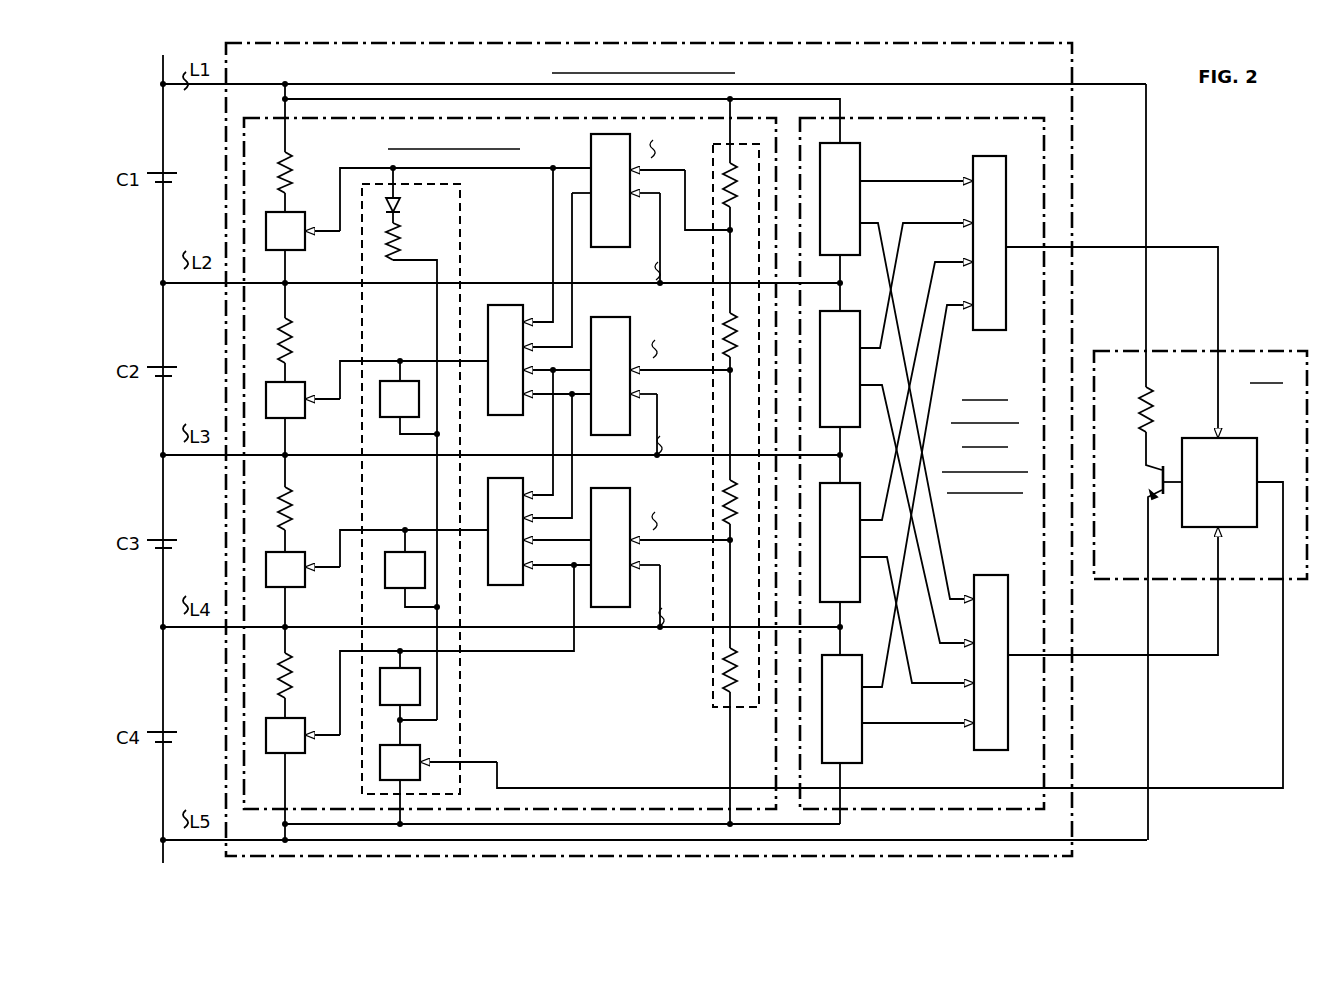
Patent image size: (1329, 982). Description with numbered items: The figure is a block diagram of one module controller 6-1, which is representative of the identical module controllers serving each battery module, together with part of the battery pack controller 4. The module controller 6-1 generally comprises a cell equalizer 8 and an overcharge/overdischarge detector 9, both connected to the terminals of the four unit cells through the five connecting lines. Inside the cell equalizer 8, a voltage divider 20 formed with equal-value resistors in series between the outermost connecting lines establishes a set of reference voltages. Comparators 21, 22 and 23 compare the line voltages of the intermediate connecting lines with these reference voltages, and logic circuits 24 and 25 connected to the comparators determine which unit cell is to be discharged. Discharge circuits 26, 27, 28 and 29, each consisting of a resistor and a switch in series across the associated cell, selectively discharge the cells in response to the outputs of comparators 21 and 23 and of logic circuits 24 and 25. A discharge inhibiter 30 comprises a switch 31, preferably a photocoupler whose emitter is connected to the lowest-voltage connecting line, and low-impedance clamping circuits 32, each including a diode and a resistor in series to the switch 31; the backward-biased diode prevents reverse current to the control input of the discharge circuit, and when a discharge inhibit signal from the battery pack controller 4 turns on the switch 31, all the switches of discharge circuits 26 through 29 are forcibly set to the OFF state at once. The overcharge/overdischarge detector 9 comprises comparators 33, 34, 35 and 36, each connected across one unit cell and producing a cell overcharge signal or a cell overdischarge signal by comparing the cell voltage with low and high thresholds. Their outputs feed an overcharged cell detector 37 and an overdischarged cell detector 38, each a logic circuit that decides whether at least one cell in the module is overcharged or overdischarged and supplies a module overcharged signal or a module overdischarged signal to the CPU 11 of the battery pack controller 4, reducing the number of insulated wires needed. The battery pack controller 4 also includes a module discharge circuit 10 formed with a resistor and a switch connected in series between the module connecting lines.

The battery pack controller 4 is at (1250, 351).
The module controller 6-1 is at (1072, 173).
The cell equalizer 8 is at (450, 118).
The overcharge/overdischarge detector 9 is at (918, 117).
The module discharge circuit 10 is at (1107, 527).
The CPU 11 is at (1240, 438).
The voltage divider 20 is at (713, 707).
The comparator 21 is at (617, 247).
The comparator 22 is at (608, 322).
The comparator 23 is at (608, 489).
The logic circuit 24 is at (509, 415).
The logic circuit 25 is at (509, 585).
The discharge circuit 26 is at (297, 195).
The discharge circuit 27 is at (302, 368).
The discharge circuit 28 is at (297, 542).
The discharge circuit 29 is at (297, 710).
The discharge inhibiter 30 is at (462, 740).
The switch 31 is at (420, 759).
The low-impedance clamping circuit 32 is at (419, 225).
The comparator 33 is at (859, 164).
The comparator 34 is at (853, 311).
The comparator 35 is at (853, 483).
The comparator 36 is at (849, 655).
The overcharged cell detector 37 is at (996, 156).
The overdischarged cell detector 38 is at (999, 575).